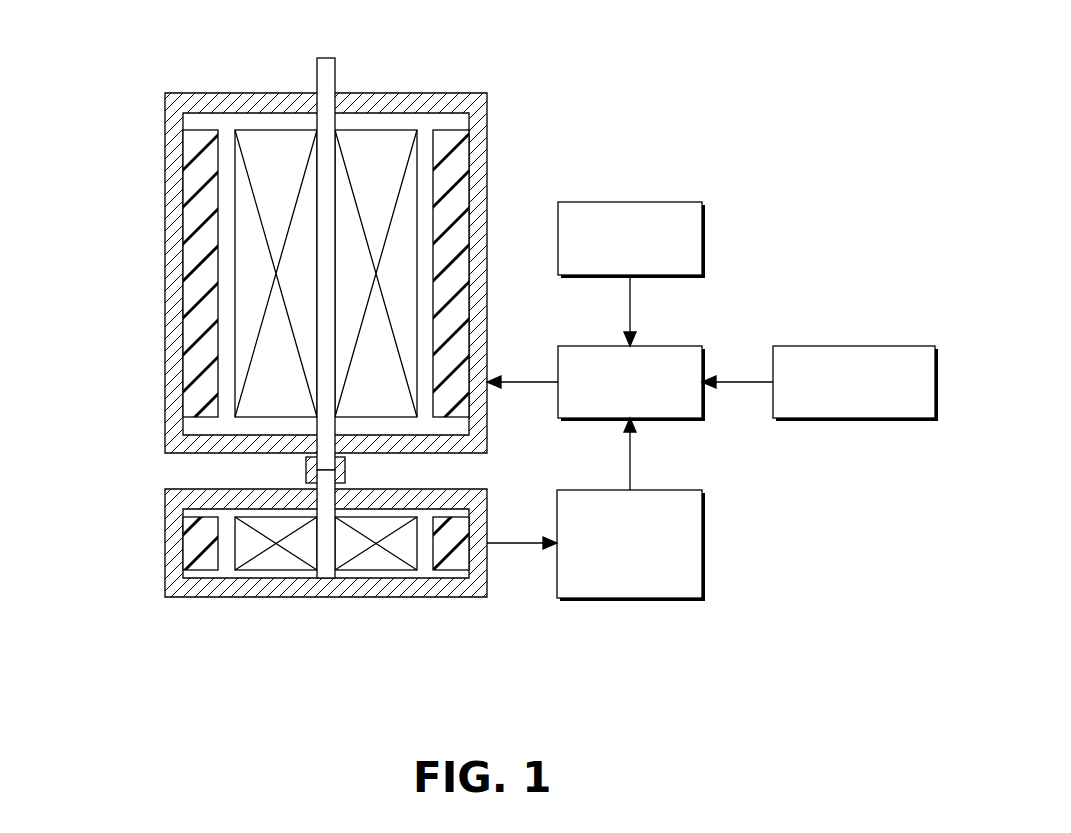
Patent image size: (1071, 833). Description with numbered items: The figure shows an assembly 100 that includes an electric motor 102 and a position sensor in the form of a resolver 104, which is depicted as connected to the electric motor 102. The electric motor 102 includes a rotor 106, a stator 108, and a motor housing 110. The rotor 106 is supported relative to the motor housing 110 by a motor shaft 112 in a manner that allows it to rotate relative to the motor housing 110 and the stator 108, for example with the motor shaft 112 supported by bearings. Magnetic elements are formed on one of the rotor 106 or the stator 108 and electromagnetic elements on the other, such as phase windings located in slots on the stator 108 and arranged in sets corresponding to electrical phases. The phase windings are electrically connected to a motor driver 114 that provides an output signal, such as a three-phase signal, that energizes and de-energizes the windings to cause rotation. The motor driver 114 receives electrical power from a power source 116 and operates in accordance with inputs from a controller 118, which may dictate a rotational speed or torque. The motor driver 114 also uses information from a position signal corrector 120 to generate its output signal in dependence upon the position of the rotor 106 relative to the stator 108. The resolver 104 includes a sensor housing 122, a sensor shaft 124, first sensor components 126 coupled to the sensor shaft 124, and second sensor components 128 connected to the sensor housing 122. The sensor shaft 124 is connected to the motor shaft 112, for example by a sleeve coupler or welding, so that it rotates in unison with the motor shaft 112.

The assembly 100 is at (97, 34).
The electric motor 102 is at (134, 143).
The resolver 104 is at (134, 515).
The rotor 106 is at (378, 133).
The stator 108 is at (200, 257).
The motor housing 110 is at (173, 192).
The motor shaft 112 is at (317, 77).
The motor driver 114 is at (668, 346).
The power source 116 is at (668, 202).
The controller 118 is at (890, 346).
The position signal corrector 120 is at (668, 490).
The sensor housing 122 is at (175, 584).
The sensor shaft 124 is at (327, 575).
The first sensor components 126 is at (362, 569).
The second sensor components 128 is at (450, 569).